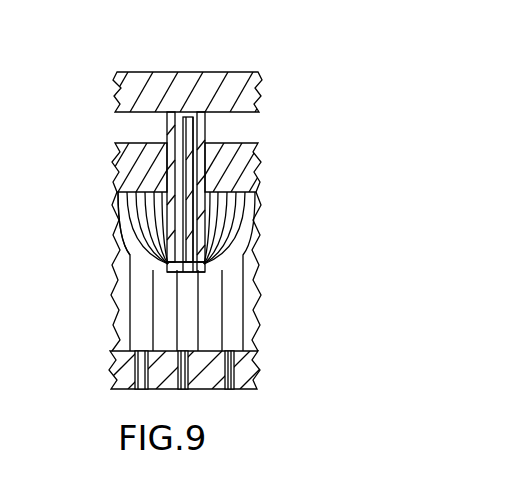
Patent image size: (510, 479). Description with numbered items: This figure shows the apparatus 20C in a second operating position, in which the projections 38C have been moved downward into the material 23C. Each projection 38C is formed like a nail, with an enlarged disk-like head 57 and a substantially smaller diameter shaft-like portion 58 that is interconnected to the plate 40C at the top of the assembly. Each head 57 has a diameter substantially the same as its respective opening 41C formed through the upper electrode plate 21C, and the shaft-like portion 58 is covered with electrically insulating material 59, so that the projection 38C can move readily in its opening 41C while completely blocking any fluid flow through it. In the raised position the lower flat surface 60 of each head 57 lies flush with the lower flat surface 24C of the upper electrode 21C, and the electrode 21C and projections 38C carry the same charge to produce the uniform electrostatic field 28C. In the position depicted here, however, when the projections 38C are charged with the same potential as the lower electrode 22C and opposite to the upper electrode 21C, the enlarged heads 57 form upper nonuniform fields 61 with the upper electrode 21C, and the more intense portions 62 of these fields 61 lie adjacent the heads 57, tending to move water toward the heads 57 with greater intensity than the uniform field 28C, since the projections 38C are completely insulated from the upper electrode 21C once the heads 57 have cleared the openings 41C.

The apparatus 20C is at (333, 148).
The upper electrode plate 21C is at (118, 148).
The lower electrode 22C is at (255, 372).
The material 23C is at (255, 320).
The lower flat surface 24C is at (245, 200).
The uniform electrostatic field 28C is at (150, 333).
The projection 38C is at (183, 176).
The plate 40C is at (130, 73).
The opening 41C is at (199, 192).
The head 57 is at (178, 272).
The shaft-like portion 58 is at (205, 222).
The electrically insulating material 59 is at (173, 133).
The lower flat surface 60 is at (195, 272).
The upper nonuniform field 61 is at (135, 200).
The more intense portion 62 is at (167, 256).